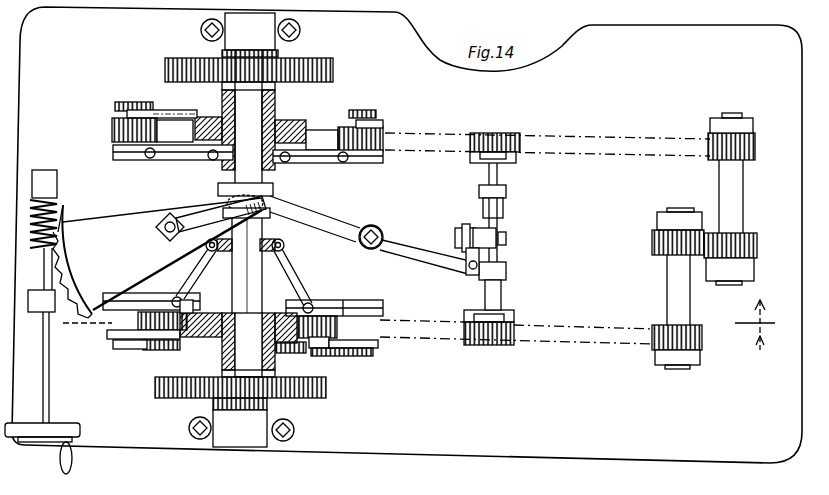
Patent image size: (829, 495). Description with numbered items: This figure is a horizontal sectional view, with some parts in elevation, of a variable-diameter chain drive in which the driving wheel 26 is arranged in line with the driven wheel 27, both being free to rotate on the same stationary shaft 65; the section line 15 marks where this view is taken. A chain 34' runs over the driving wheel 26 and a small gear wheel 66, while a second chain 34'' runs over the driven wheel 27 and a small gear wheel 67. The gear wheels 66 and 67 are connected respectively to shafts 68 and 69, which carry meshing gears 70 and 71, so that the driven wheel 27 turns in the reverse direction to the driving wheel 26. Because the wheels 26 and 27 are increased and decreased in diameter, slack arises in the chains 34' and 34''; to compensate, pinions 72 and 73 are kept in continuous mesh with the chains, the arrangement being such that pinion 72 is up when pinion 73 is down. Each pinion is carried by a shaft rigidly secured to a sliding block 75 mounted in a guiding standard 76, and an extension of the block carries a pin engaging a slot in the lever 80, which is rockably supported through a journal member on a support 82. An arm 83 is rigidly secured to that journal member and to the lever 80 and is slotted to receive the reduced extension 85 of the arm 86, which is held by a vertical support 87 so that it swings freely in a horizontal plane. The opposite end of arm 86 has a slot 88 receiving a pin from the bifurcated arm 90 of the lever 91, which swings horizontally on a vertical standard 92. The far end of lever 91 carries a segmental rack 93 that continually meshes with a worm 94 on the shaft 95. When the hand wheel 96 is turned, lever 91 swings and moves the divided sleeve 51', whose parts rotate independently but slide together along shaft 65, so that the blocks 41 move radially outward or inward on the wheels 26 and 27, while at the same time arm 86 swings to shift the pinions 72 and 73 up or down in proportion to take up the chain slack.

The driving wheel 26 is at (217, 116).
The blocks 41 is at (113, 152).
The stationary shaft 65 is at (256, 265).
The slot 88 is at (273, 197).
The divided sleeve 51' is at (248, 272).
The bifurcated arm 90 is at (210, 215).
The vertical standard 92 is at (168, 241).
The lever 91 is at (136, 220).
The segmental rack 93 is at (74, 292).
The worm 94 is at (63, 206).
The shaft 95 is at (48, 340).
The hand wheel 96 is at (70, 428).
The section line 15 is at (403, 306).
The arm 86 is at (358, 225).
The vertical support 87 is at (369, 248).
The reduced extension 85 is at (445, 253).
The chain 34' is at (547, 135).
The chain 34'' is at (517, 342).
The pinion 72 is at (496, 133).
The guiding standard 76 is at (516, 156).
The sliding block 75 is at (472, 162).
The lever 80 is at (506, 188).
The arm 83 is at (462, 230).
The support 82 is at (507, 238).
The pinion 73 is at (490, 346).
The small gear wheel 66 is at (756, 150).
The shaft 68 is at (745, 196).
The meshing gear 70 is at (760, 243).
The meshing gear 71 is at (652, 248).
The shaft 69 is at (662, 290).
The small gear wheel 67 is at (703, 348).
The driven wheel 27 is at (207, 311).